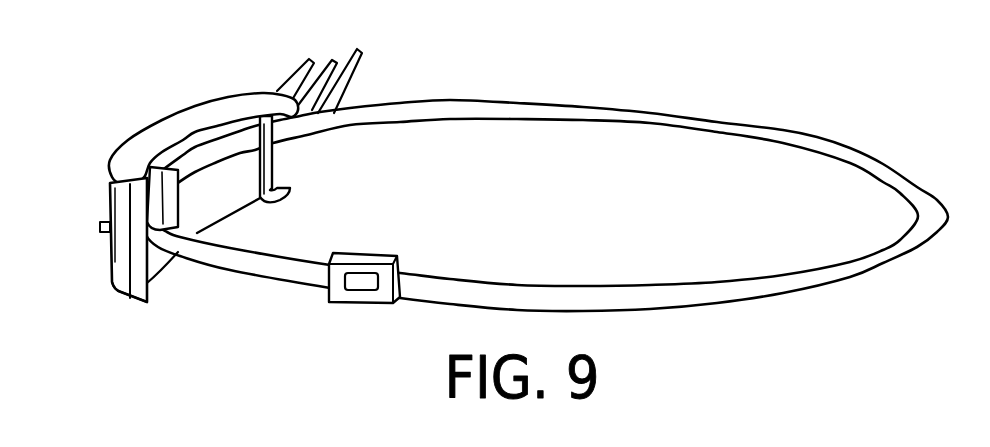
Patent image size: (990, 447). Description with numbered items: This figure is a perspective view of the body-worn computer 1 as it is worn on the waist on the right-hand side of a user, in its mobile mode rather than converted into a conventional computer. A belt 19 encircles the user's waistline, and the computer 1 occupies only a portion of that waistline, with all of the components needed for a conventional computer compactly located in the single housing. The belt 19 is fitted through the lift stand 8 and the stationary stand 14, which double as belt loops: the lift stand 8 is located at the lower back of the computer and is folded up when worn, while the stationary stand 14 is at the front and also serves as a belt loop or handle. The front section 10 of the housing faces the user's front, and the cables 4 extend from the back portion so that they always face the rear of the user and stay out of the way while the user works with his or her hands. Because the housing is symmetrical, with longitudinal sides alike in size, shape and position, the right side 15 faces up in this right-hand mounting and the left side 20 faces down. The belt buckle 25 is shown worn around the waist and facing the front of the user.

The computer 1 is at (207, 92).
The cables 4 is at (298, 70).
The lift stand 8 is at (183, 207).
The front section 10 is at (108, 198).
The stationary stand 14 is at (268, 181).
The right side 15 is at (167, 130).
The belt 19 is at (822, 132).
The left side 20 is at (120, 293).
The belt buckle 25 is at (390, 304).